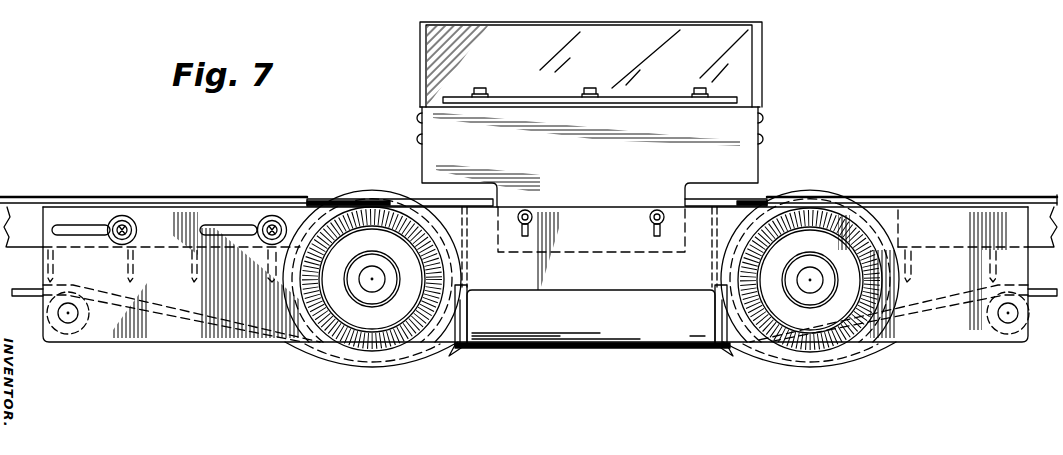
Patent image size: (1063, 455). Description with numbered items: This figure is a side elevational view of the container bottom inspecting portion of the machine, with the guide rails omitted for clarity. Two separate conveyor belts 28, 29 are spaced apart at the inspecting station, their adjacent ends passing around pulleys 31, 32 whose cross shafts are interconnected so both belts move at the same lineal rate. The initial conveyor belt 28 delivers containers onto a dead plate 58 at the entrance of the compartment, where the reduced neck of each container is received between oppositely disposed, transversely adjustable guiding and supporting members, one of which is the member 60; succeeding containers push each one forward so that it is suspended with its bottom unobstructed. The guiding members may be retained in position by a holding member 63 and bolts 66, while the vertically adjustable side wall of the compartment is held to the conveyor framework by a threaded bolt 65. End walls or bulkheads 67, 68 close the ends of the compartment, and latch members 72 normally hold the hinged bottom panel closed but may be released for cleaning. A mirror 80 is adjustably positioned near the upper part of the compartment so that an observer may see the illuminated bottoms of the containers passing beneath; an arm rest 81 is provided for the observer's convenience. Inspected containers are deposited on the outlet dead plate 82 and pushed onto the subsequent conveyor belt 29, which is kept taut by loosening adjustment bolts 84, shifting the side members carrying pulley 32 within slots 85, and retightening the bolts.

The conveyor belt 28 is at (973, 197).
The conveyor belt 29 is at (68, 197).
The pulley 31 is at (796, 365).
The pulley 32 is at (373, 348).
The dead plate 58 is at (760, 198).
The guiding and supporting member 60 is at (739, 107).
The holding member 63 is at (732, 100).
The threaded bolt 65 is at (527, 209).
The bolt 66 is at (487, 88).
The end wall 67 is at (713, 253).
The end wall 68 is at (468, 257).
The latch member 72 is at (460, 353).
The mirror 80 is at (738, 50).
The arm rest 81 is at (567, 350).
The dead plate 82 is at (424, 197).
The adjustment bolt 84 is at (128, 221).
The slot 85 is at (85, 225).